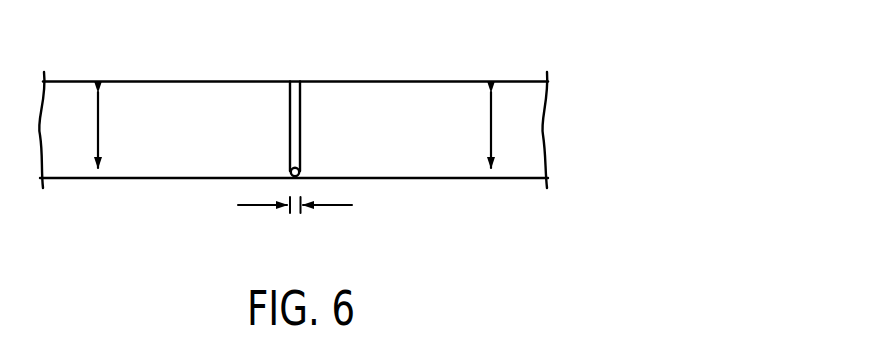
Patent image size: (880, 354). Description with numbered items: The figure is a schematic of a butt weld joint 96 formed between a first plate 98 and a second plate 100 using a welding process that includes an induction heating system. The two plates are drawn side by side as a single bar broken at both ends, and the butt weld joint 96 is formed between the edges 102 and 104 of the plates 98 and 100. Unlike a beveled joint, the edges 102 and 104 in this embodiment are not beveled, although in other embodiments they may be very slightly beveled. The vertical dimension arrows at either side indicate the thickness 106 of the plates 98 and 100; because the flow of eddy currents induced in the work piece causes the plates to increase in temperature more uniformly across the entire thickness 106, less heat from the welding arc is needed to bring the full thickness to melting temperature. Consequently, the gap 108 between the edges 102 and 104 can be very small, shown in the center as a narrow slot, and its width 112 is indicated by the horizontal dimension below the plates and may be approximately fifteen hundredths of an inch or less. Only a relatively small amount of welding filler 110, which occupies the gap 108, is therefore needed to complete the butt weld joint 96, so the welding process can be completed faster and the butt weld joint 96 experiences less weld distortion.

The butt weld joint 96 is at (469, 31).
The first plate 98 is at (182, 162).
The second plate 100 is at (435, 157).
The edge 102 is at (290, 128).
The edge 104 is at (300, 128).
The thickness 106 is at (98, 128).
The gap 108 is at (294, 112).
The welding filler 110 is at (302, 77).
The width 112 is at (292, 215).